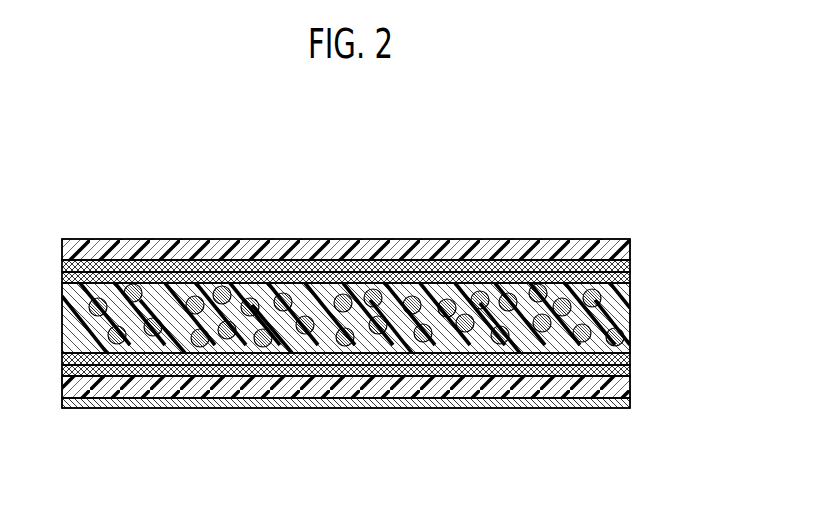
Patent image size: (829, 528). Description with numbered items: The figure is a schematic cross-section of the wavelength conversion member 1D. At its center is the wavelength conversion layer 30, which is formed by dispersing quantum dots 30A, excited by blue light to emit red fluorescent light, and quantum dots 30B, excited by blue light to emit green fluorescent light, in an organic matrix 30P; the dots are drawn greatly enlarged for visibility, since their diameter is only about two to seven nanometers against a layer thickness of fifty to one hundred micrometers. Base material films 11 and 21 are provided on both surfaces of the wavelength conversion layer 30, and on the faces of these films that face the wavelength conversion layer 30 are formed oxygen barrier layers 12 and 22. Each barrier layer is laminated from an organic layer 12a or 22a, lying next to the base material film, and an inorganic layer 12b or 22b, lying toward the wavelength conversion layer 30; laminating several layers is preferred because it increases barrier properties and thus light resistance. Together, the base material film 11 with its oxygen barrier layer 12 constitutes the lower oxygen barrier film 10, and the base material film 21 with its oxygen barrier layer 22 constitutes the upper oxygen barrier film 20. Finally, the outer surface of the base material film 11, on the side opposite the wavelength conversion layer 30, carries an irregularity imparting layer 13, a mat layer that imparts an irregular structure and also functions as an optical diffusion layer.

The wavelength conversion member 1D is at (674, 159).
The oxygen barrier film 10 is at (749, 378).
The base material film 11 is at (634, 395).
The oxygen barrier layer 12 is at (704, 368).
The organic layer 12a is at (631, 368).
The inorganic layer 12b is at (631, 360).
The irregularity imparting layer 13 is at (610, 409).
The oxygen barrier film 20 is at (749, 196).
The base material film 21 is at (630, 241).
The oxygen barrier layer 22 is at (704, 237).
The organic layer 22a is at (631, 262).
The inorganic layer 22b is at (631, 277).
The wavelength conversion layer 30 is at (749, 289).
The quantum dots 30A is at (78, 258).
The quantum dots 30B is at (133, 284).
The organic matrix 30P is at (98, 342).